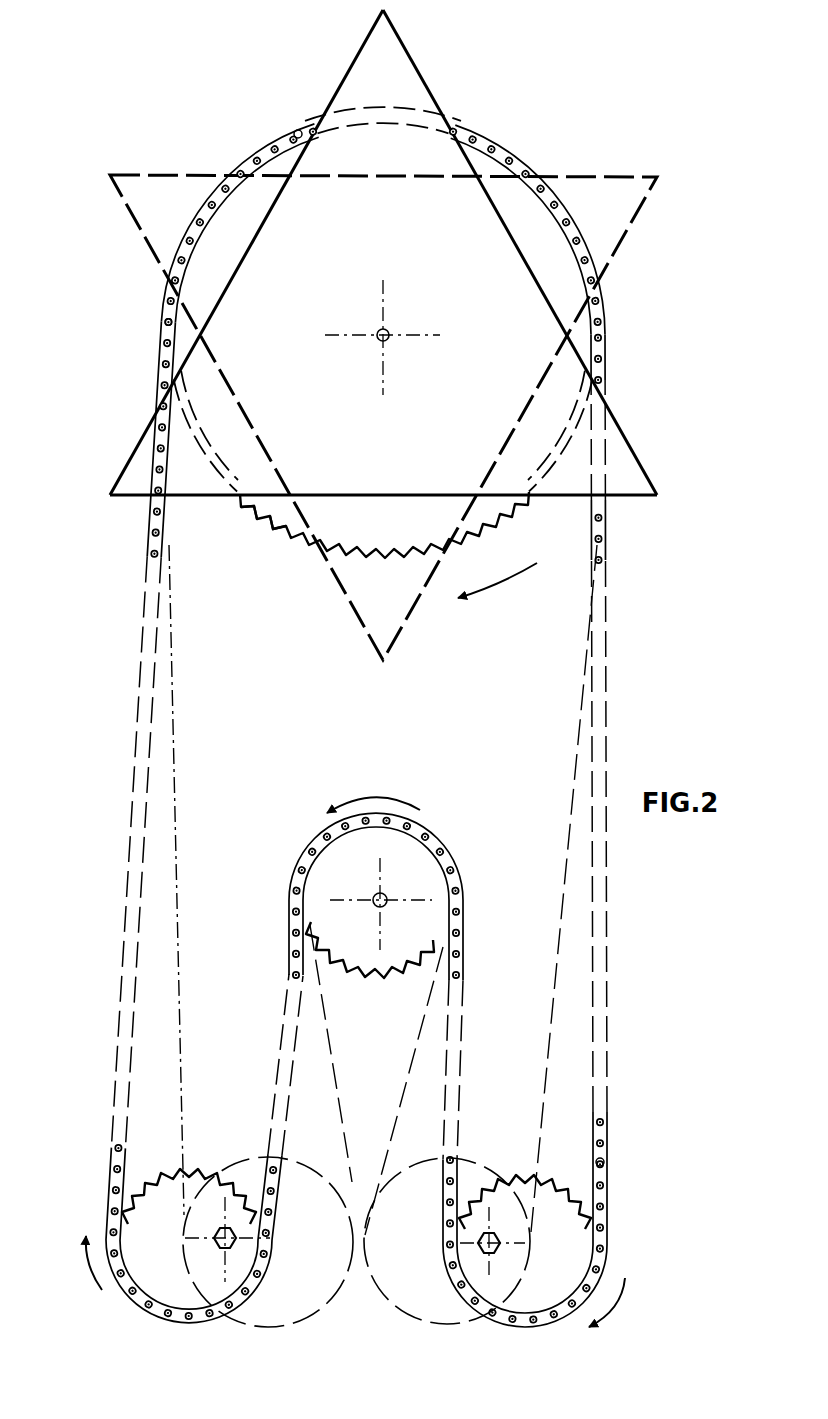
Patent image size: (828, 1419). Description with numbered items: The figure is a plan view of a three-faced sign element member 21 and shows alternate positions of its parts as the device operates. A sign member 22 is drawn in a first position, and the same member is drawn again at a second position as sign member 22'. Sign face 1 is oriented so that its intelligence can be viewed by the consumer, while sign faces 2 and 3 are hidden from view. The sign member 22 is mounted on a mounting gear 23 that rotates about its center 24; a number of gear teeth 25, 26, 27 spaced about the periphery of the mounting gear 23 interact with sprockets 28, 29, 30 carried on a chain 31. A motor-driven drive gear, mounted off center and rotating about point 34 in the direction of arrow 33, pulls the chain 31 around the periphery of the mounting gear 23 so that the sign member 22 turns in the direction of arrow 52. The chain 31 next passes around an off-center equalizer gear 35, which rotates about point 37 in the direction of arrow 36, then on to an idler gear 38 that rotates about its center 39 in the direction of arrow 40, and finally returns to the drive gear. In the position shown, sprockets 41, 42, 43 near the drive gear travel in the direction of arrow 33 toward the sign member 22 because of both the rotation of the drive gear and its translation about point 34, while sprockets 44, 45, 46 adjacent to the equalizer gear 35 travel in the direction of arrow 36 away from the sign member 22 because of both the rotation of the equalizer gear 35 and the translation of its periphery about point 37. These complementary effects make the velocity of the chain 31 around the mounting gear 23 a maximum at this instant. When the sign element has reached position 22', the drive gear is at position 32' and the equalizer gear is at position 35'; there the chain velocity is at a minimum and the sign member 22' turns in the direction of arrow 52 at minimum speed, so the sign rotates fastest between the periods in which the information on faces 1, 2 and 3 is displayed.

The sign face 1 is at (258, 235).
The sign face 2 is at (505, 235).
The sign face 3 is at (383, 493).
The three-faced sign element member 21 is at (92, 378).
The sign member 22 is at (383, 252).
The sign member at second position 22' is at (399, 417).
The mounting gear 23 is at (403, 558).
The center 24 is at (388, 332).
The gear tooth 25 is at (240, 506).
The gear tooth 26 is at (267, 520).
The gear tooth 27 is at (285, 535).
The sprocket 28 is at (239, 204).
The sprocket 29 is at (260, 152).
The sprocket 30 is at (297, 132).
The chain 31 is at (604, 712).
The drive gear at second position 32' is at (268, 1224).
The arrow 33 is at (102, 1288).
The point 34 is at (242, 1238).
The equalizer gear 35 is at (525, 1178).
The equalizer gear at second position 35' is at (431, 1249).
The arrow 36 is at (613, 1303).
The point 37 is at (480, 1248).
The idler gear 38 is at (377, 966).
The center 39 is at (384, 897).
The arrow 40 is at (378, 797).
The sprocket 41 is at (115, 1232).
The sprocket 42 is at (165, 1228).
The sprocket 43 is at (105, 1153).
The sprocket 44 is at (547, 1216).
The sprocket 45 is at (603, 1122).
The sprocket 46 is at (603, 1162).
The arrow 52 is at (497, 593).